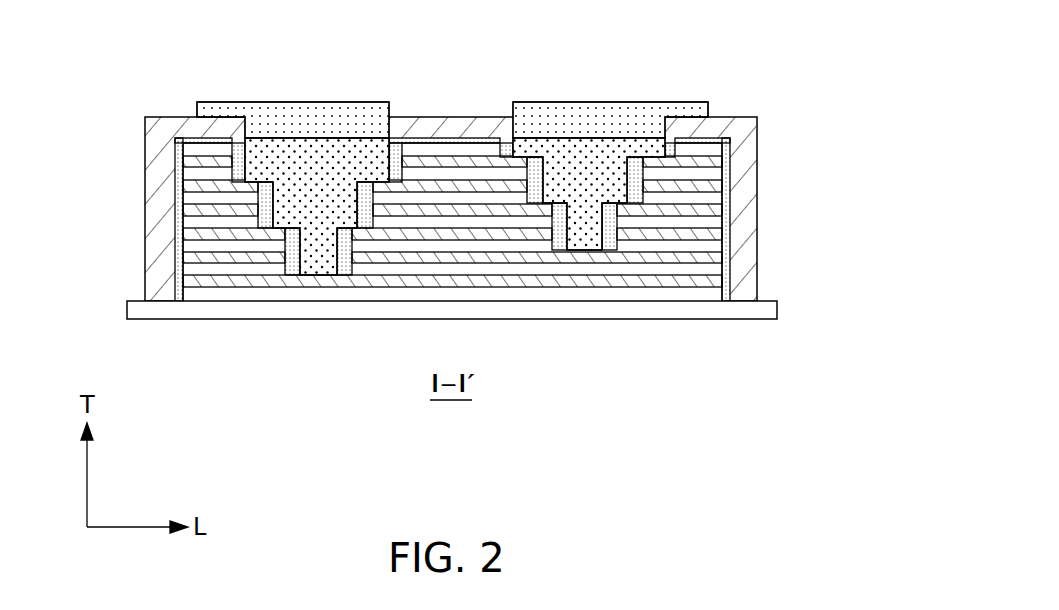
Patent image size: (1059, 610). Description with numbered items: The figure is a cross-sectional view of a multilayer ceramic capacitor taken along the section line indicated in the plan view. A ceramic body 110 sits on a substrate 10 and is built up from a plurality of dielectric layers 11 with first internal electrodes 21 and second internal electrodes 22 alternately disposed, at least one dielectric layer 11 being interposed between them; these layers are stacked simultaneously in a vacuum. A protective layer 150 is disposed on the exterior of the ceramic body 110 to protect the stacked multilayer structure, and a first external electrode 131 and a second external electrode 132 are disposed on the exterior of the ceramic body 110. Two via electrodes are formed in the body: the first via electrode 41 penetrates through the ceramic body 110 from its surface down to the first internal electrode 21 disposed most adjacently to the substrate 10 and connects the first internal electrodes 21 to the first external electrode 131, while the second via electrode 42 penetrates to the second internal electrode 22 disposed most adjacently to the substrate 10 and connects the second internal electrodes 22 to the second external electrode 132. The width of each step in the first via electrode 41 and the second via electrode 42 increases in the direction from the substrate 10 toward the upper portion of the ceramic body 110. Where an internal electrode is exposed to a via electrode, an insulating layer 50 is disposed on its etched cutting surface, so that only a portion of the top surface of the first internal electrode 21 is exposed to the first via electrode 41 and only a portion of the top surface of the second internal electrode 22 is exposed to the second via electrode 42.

The substrate 10 is at (747, 310).
The dielectric layer 11 is at (713, 292).
The first internal electrode 21 is at (178, 278).
The second internal electrode 22 is at (180, 258).
The first via electrode 41 is at (293, 160).
The second via electrode 42 is at (613, 157).
The insulating layer 50 is at (613, 227).
The ceramic body 110 is at (728, 181).
The first external electrode 131 is at (357, 108).
The second external electrode 132 is at (553, 108).
The protective layer 150 is at (743, 133).